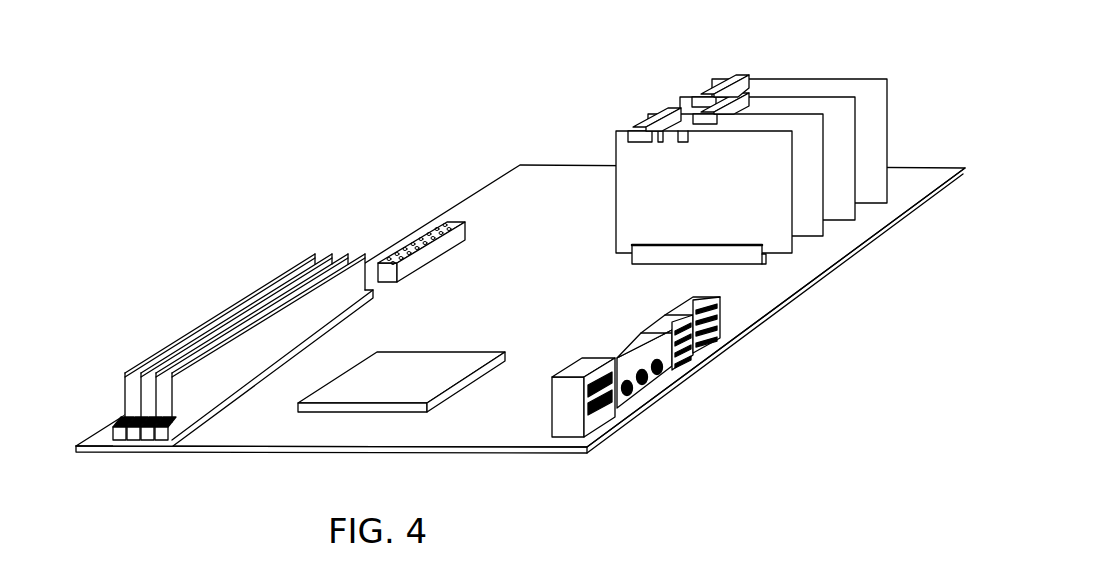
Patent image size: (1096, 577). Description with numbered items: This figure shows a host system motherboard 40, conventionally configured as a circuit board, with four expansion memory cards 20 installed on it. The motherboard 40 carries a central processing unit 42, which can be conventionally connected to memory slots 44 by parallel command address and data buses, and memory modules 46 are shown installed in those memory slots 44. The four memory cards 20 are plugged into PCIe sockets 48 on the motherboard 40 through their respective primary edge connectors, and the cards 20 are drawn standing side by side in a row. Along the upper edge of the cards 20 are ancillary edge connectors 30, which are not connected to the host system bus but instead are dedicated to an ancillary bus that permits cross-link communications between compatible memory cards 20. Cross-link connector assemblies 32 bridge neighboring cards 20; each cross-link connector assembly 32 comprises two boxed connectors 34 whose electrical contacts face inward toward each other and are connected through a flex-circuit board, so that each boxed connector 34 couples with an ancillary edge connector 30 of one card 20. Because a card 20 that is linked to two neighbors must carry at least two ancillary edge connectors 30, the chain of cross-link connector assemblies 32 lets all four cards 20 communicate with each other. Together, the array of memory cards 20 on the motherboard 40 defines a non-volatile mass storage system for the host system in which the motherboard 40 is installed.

The memory card 20 is at (767, 168).
The ancillary edge connector 30 is at (670, 137).
The cross-link connector assembly 32 is at (710, 84).
The boxed connector 34 is at (642, 137).
The motherboard 40 is at (627, 487).
The central processing unit 42 is at (408, 385).
The memory slot 44 is at (223, 397).
The memory module 46 is at (227, 383).
The PCIe socket 48 is at (640, 255).